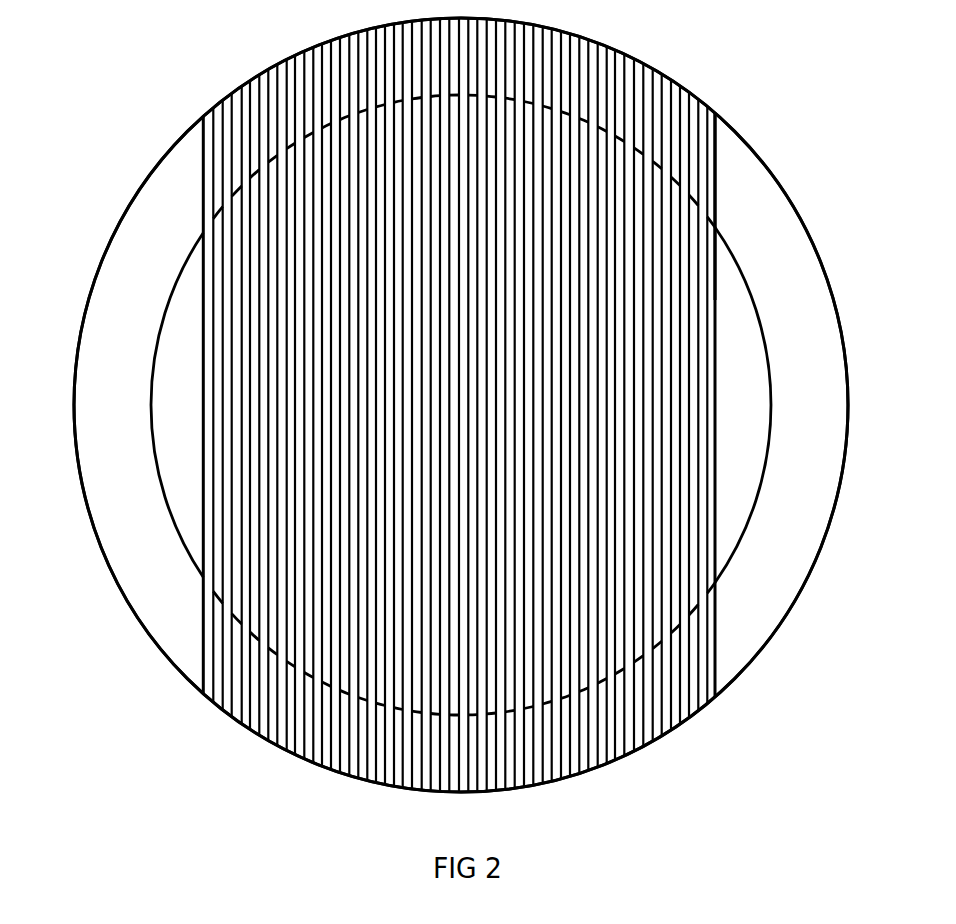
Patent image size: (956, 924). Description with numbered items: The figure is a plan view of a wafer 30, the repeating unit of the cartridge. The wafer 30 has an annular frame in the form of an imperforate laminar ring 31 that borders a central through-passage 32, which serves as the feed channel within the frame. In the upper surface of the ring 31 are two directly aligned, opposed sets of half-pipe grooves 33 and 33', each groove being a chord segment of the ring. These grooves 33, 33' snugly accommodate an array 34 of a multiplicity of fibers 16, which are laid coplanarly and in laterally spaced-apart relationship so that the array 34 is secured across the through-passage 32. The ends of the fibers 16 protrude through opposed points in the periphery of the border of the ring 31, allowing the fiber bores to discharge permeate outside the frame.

The wafer 30 is at (163, 724).
The laminar ring 31 is at (768, 612).
The through-passage 32 is at (743, 435).
The fibers 16 is at (203, 303).
The half-pipe grooves 33 is at (766, 441).
The half-pipe grooves 33' is at (782, 194).
The array 34 is at (223, 505).